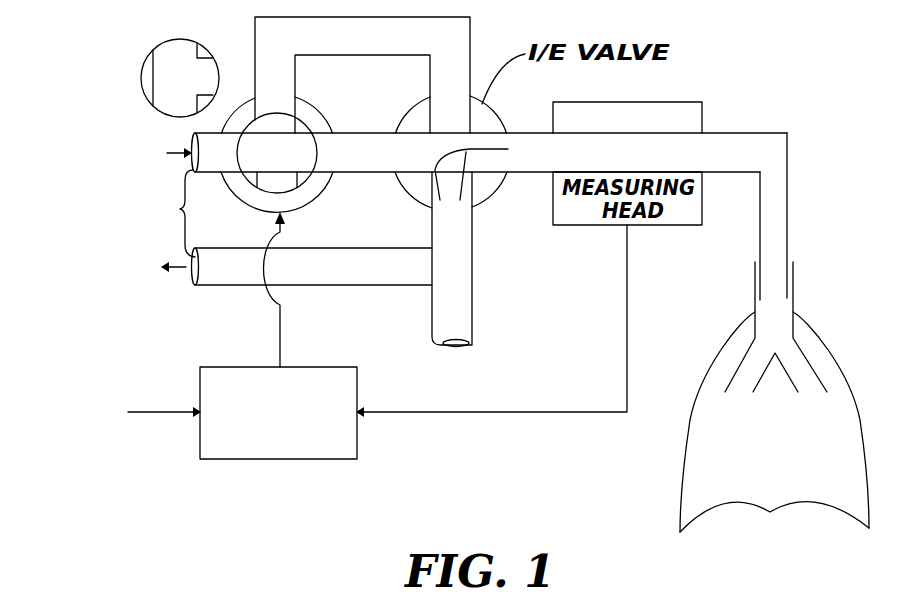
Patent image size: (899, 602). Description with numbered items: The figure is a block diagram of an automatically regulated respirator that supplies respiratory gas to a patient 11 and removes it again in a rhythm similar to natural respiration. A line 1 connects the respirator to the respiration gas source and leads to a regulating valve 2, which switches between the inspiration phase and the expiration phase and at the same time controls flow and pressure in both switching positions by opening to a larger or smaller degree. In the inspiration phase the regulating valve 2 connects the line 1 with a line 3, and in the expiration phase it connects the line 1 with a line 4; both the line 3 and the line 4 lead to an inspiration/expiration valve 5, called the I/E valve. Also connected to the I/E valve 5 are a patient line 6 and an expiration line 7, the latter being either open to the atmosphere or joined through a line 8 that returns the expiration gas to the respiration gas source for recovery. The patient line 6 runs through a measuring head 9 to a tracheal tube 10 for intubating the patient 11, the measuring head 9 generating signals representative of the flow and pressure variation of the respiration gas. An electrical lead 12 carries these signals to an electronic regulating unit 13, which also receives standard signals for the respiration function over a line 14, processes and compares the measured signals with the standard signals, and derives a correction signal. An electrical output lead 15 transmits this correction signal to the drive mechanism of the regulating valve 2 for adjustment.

The line 1 is at (210, 173).
The regulating valve 2 is at (308, 117).
The line 3 is at (370, 155).
The line 4 is at (462, 40).
The inspiration/expiration valve 5 is at (490, 122).
The patient line 6 is at (536, 158).
The expiration line 7 is at (470, 249).
The line 8 is at (362, 272).
The measuring head 9 is at (658, 117).
The tracheal tube 10 is at (778, 213).
The patient 11 is at (825, 338).
The electrical lead 12 is at (627, 288).
The regulating unit 13 is at (358, 435).
The line 14 is at (160, 415).
The electrical output lead 15 is at (280, 317).